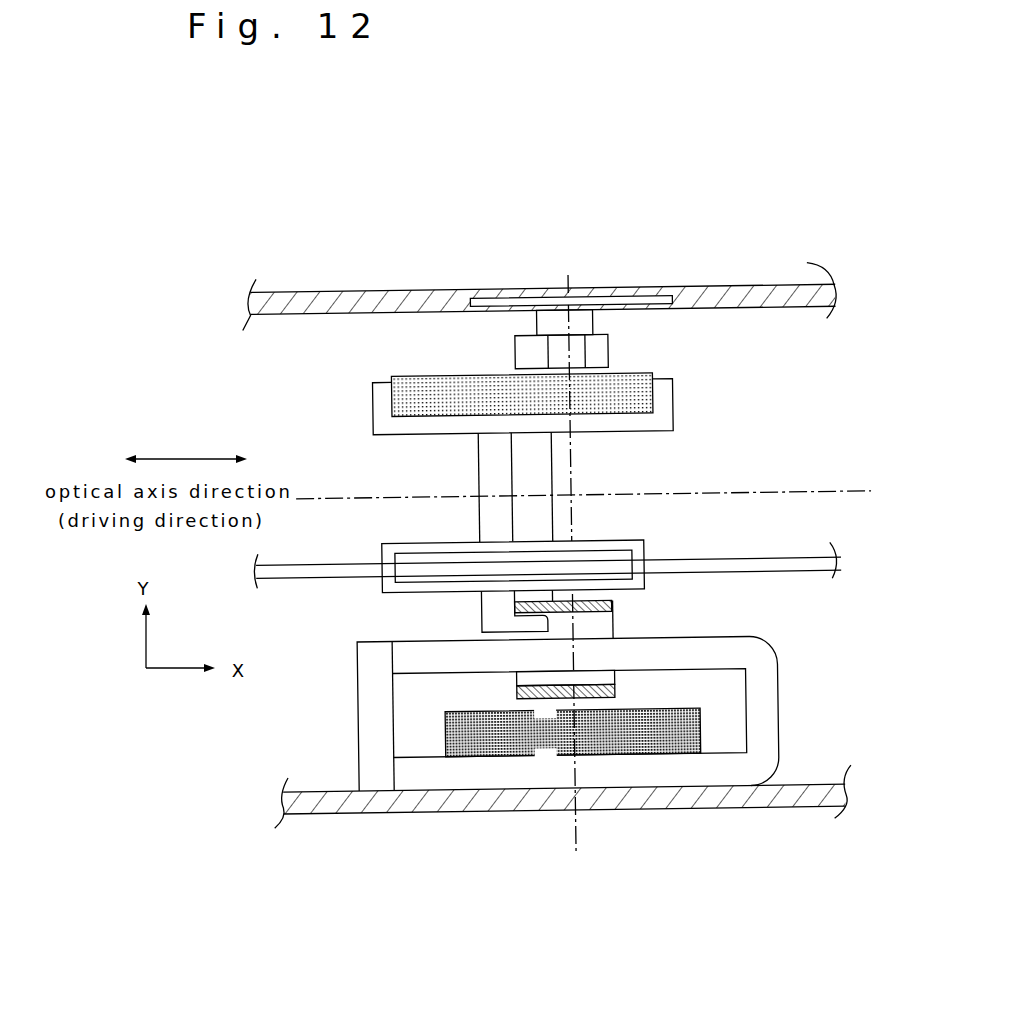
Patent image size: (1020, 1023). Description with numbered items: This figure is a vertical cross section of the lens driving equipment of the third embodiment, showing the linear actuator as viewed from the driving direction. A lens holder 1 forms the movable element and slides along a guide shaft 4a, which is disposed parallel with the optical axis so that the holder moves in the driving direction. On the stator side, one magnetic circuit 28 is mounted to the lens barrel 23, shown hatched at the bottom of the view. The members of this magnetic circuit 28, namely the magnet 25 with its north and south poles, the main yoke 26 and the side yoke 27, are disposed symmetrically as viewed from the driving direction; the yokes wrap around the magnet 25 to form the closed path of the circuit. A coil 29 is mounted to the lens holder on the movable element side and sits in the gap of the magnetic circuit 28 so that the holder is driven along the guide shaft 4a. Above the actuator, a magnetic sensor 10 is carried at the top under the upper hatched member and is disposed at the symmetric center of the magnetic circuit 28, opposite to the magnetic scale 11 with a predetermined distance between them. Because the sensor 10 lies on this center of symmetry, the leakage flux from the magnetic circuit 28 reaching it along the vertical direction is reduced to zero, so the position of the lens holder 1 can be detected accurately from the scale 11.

The lens holder 1 is at (489, 479).
The magnetic sensor 10 is at (587, 297).
The magnetic scale 11 is at (494, 392).
The guide shaft 4a is at (728, 560).
The lens barrel 23 is at (629, 803).
The magnet 25 is at (514, 736).
The main yoke 26 is at (444, 778).
The side yoke 27 is at (377, 745).
The magnetic circuit 28 is at (459, 938).
The coil 29 is at (613, 693).